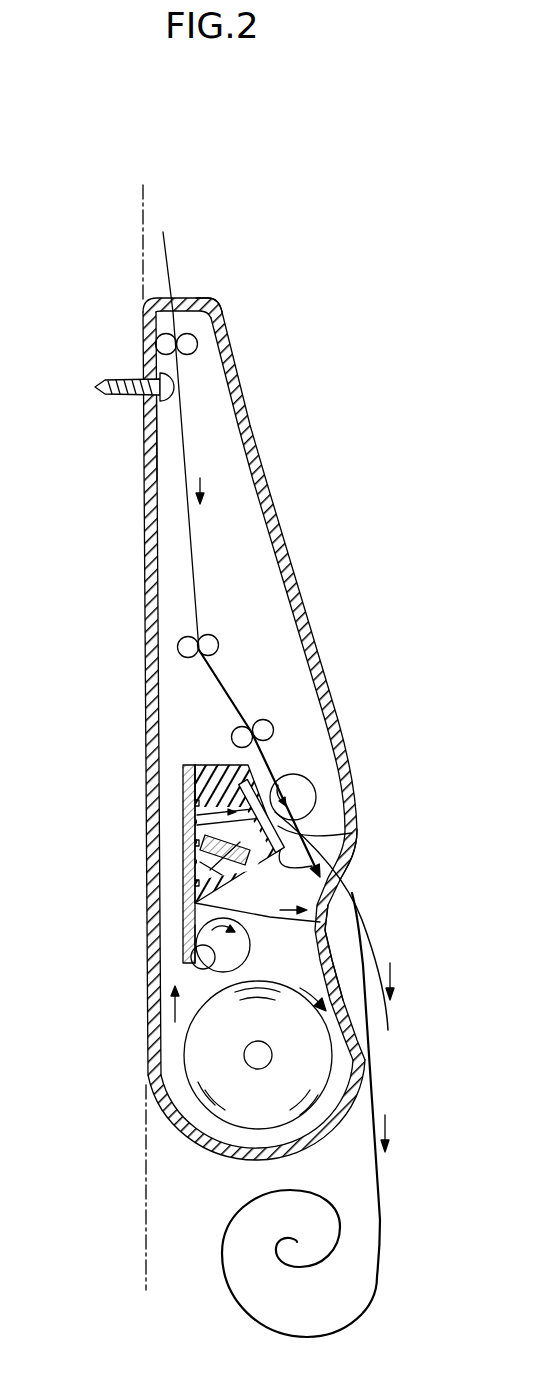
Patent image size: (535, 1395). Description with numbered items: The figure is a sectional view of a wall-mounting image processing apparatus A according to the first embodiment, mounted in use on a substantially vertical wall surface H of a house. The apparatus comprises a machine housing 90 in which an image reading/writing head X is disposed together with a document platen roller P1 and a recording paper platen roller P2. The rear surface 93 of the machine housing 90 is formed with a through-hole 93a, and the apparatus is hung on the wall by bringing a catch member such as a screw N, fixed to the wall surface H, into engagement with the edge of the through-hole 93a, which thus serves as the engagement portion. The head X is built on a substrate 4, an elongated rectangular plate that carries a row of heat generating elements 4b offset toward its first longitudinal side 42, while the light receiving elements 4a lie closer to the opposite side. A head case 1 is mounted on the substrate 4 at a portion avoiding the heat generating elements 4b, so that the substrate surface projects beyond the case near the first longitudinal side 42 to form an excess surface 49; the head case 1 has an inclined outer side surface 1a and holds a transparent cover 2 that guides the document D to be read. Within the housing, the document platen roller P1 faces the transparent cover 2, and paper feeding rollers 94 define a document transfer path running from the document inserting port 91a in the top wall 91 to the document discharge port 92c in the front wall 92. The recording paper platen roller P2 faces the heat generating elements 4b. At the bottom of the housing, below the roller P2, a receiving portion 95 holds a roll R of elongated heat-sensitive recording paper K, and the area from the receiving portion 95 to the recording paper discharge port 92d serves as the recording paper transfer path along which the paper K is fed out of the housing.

The wall surface H is at (143, 207).
The machine housing 90 is at (300, 554).
The top wall of housing 91 is at (208, 302).
The document inserting port 91a is at (188, 302).
The right side wall of housing 92 is at (312, 640).
The document discharge port 92c is at (345, 878).
The recording paper discharge port 92d is at (333, 915).
The rear surface 93 is at (150, 672).
The through-hole 93a is at (147, 426).
The receiving portion 95 is at (160, 1086).
The screw N is at (125, 396).
The document D is at (178, 395).
The wall-mounting image processing apparatus A is at (290, 410).
The paper feeding rollers 94 is at (190, 345).
The head case 1 is at (205, 757).
The outer side surface 1a is at (352, 833).
The transparent cover 2 is at (300, 812).
The document platen roller P1 is at (300, 797).
The substrate 4 is at (192, 890).
The light receiving elements 4a is at (192, 840).
The heat generating elements 4b is at (203, 935).
The image reading/writing head X is at (178, 855).
The first longitudinal side 42 is at (192, 955).
The excess surface 49 is at (215, 965).
The recording paper platen roller P2 is at (240, 945).
The roll R is at (225, 1123).
The heat-sensitive recording paper K is at (380, 1218).